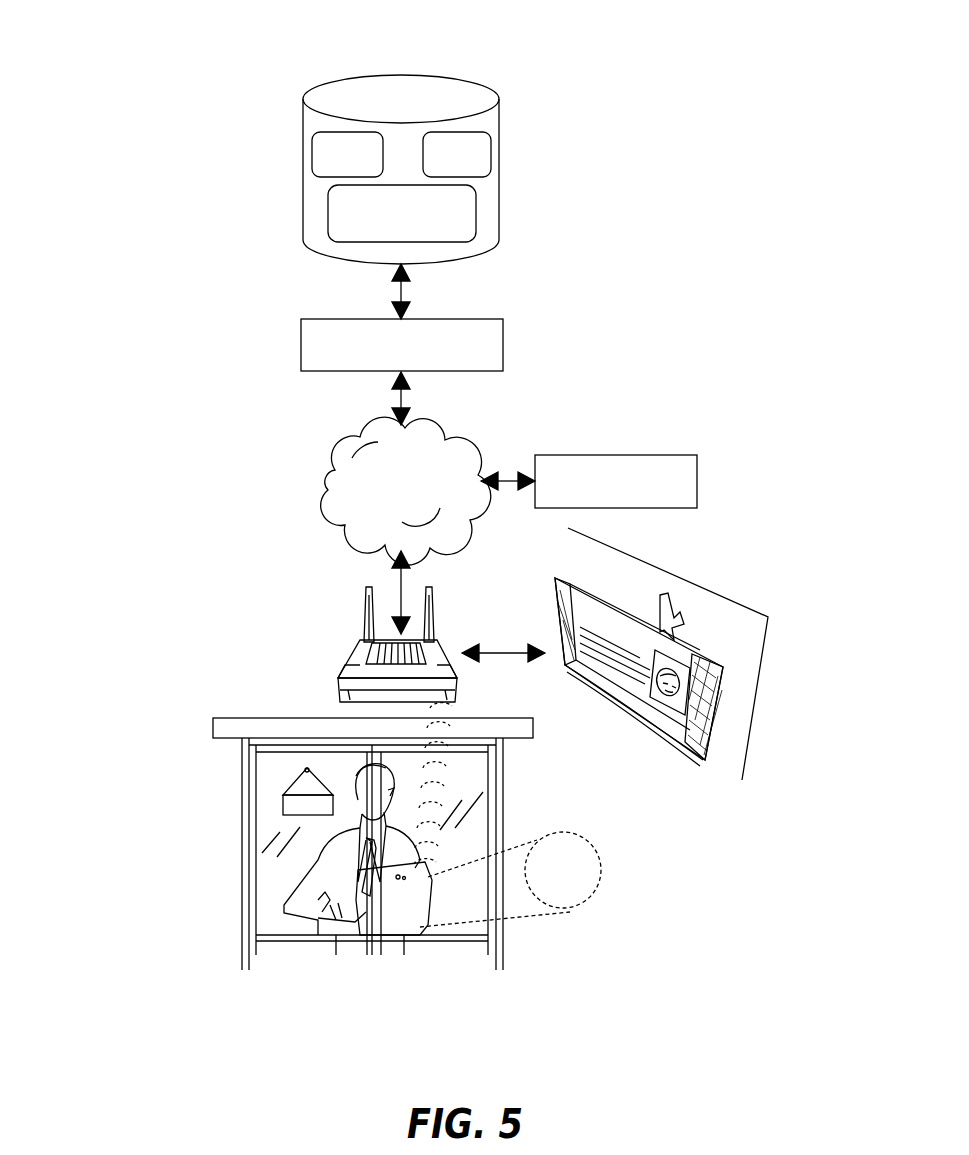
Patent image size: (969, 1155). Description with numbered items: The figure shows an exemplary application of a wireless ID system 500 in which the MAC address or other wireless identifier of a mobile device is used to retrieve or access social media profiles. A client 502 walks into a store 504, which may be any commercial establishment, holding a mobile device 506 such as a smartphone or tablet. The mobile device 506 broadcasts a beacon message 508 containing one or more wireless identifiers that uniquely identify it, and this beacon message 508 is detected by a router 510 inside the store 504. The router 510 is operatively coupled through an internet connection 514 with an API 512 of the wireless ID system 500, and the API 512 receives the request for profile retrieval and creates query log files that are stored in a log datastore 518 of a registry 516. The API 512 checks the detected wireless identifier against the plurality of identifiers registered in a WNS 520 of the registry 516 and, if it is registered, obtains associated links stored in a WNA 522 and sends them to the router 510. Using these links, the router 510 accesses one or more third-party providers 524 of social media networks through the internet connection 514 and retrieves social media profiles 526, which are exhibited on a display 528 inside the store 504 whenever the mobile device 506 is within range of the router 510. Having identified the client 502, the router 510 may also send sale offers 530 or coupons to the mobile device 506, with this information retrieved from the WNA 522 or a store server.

The wireless ID system 500 is at (146, 136).
The client 502 is at (310, 888).
The store 504 is at (242, 685).
The mobile device 506 is at (388, 905).
The beacon message 508 is at (440, 780).
The router 510 is at (370, 655).
The API 512 is at (325, 341).
The internet connection 514 is at (340, 490).
The registry 516 is at (432, 96).
The log datastore 518 is at (338, 228).
The WNS 520 is at (330, 143).
The WNA 522 is at (478, 141).
The third-party provider 524 is at (676, 457).
The social media profile 526 is at (613, 637).
The display 528 is at (720, 712).
The sale offers 530 is at (592, 850).